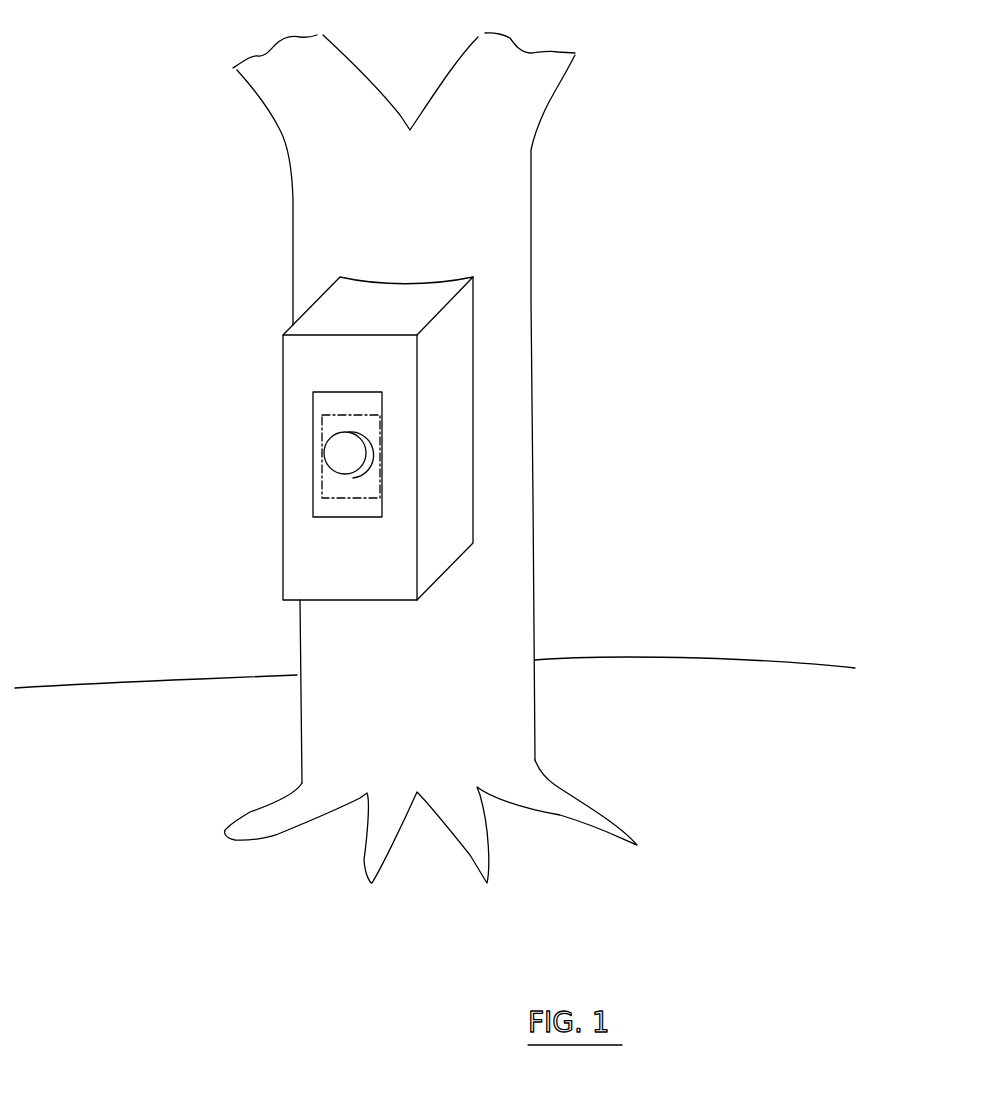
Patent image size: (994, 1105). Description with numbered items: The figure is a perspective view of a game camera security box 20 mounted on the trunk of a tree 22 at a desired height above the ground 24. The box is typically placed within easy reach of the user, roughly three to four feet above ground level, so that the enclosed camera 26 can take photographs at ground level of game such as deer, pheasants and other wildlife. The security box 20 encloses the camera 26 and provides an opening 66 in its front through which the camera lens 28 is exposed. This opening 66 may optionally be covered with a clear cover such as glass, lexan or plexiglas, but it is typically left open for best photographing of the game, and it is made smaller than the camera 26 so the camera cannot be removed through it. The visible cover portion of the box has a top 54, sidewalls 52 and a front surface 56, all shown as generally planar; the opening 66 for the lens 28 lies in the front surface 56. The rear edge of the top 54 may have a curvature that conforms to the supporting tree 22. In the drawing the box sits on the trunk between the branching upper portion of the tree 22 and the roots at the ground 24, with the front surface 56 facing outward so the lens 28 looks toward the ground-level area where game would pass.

The security box 20 is at (386, 444).
The tree 22 is at (522, 615).
The ground 24 is at (722, 750).
The camera 26 is at (370, 428).
The camera lens 28 is at (340, 458).
The sidewalls 52 is at (462, 348).
The top 54 is at (382, 303).
The front surface 56 is at (353, 575).
The opening 66 is at (315, 507).